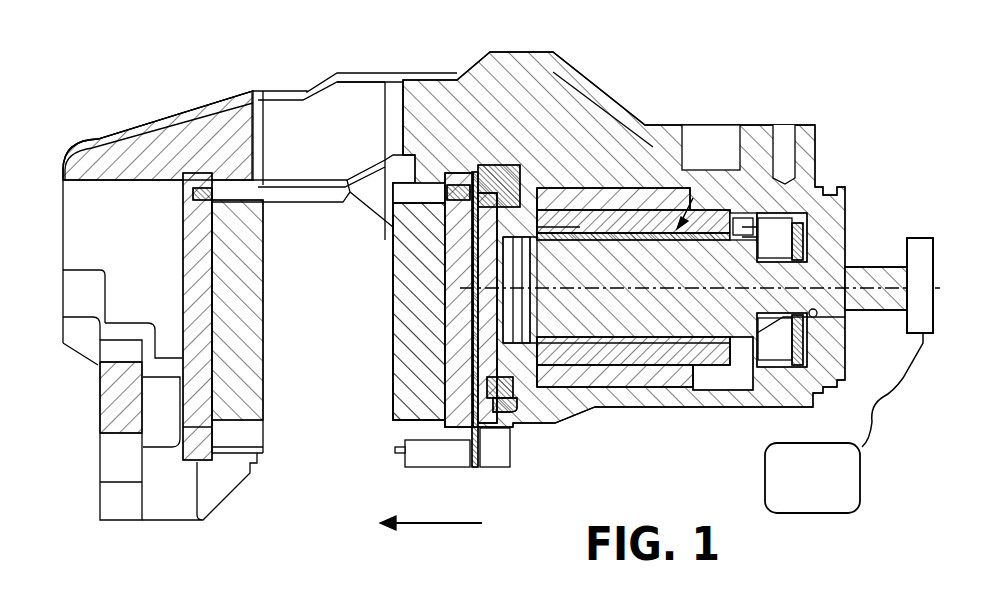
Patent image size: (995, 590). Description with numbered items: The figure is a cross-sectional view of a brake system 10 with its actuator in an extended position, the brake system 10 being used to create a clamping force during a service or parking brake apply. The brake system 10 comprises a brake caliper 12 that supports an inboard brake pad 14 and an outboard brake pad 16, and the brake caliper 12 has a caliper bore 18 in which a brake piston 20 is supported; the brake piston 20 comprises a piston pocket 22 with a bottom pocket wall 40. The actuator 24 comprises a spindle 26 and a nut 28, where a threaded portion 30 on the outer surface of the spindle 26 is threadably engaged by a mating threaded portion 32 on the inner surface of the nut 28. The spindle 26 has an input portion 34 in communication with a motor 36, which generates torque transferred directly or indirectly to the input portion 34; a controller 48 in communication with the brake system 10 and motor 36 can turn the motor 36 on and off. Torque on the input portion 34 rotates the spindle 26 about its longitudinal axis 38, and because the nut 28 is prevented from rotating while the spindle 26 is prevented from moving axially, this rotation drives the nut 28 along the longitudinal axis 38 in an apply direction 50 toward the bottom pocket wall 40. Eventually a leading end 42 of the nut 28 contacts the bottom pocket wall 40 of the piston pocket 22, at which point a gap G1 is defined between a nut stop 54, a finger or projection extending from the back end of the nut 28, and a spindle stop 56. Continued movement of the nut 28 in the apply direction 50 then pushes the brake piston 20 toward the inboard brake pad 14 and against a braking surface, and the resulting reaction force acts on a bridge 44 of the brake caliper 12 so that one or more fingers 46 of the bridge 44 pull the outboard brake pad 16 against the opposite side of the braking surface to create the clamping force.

The brake system 10 is at (201, 66).
The brake caliper 12 is at (803, 128).
The inboard brake pad 14 is at (400, 393).
The outboard brake pad 16 is at (258, 392).
The caliper bore 18 is at (710, 377).
The brake piston 20 is at (613, 383).
The piston pocket 22 is at (650, 367).
The actuator 24 is at (735, 224).
The spindle 26 is at (634, 257).
The nut 28 is at (556, 227).
The threaded portion 30 is at (661, 257).
The mating threaded portion 32 is at (590, 235).
The input portion 34 is at (883, 267).
The motor 36 is at (920, 238).
The longitudinal axis 38 is at (552, 290).
The bottom pocket wall 40 is at (515, 226).
The leading end 42 is at (523, 220).
The bridge 44 is at (285, 107).
The fingers 46 is at (162, 395).
The controller 48 is at (844, 423).
The apply direction 50 is at (437, 525).
The nut stop 54 is at (745, 230).
The spindle stop 56 is at (757, 234).
The gap G1 is at (752, 232).